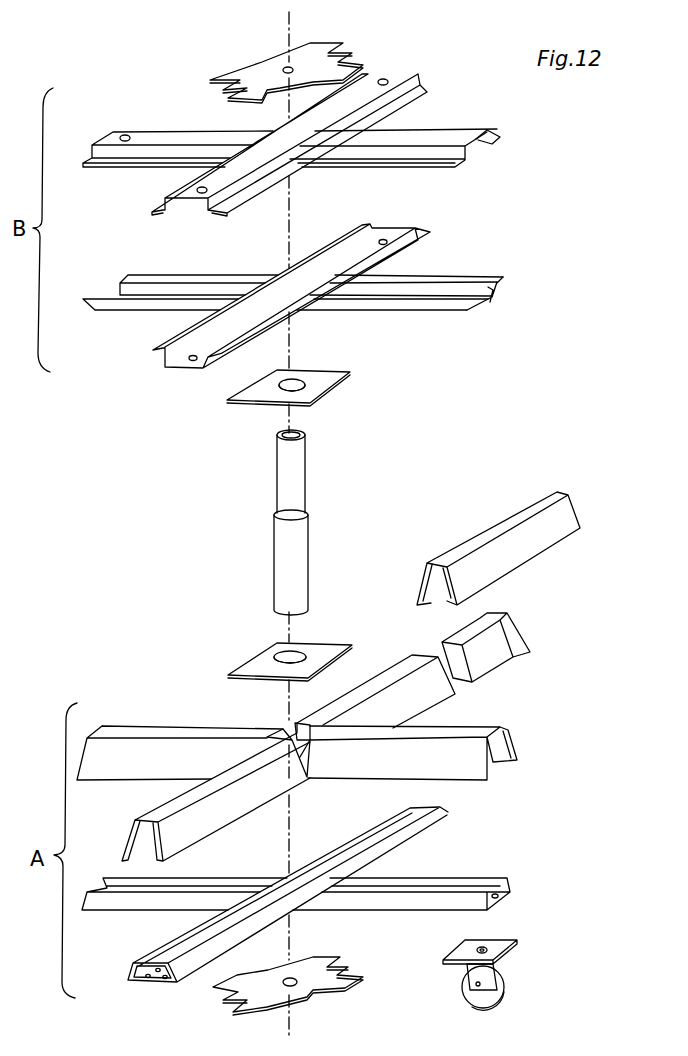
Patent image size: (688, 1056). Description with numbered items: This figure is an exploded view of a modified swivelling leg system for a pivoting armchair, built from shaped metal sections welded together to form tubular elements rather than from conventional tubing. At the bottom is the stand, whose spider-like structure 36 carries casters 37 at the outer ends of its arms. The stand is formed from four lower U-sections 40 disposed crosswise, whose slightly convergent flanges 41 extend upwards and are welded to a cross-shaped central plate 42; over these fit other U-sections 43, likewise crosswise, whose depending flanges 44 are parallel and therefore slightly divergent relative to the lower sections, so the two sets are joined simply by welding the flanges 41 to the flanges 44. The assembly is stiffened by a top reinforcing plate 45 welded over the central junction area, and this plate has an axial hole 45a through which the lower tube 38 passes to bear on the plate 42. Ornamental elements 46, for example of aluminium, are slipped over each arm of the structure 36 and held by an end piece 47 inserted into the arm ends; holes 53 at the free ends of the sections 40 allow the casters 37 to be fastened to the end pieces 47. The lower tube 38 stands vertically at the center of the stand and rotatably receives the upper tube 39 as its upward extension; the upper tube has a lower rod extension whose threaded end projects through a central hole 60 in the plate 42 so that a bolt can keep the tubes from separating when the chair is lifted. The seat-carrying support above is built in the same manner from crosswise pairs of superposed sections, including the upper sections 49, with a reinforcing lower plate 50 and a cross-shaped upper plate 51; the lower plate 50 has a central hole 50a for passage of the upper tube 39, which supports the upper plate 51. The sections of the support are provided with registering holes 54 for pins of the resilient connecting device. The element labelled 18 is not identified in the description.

The upper plate 51 is at (319, 52).
The upper sections 49 is at (152, 133).
The registering holes 54 is at (473, 152).
The lower cross frame member 18 is at (110, 310).
The lower plate 50 is at (333, 370).
The central hole 50a is at (272, 398).
The upper tube 39 is at (302, 462).
The lower tube 38 is at (278, 560).
The top reinforcing plate 45 is at (330, 648).
The axial hole 45a is at (265, 653).
The ornamental elements 46 is at (527, 510).
The end piece 47 is at (490, 666).
The upper U-sections 43 is at (133, 794).
The depending flanges 44 is at (337, 768).
The spider-like structure 36 is at (427, 865).
The lower U-sections 40 is at (347, 902).
The convergent flanges 41 is at (188, 960).
The holes 53 is at (165, 979).
The cross-shaped central plate 42 is at (328, 982).
The central hole 60 is at (290, 993).
The casters 37 is at (503, 970).